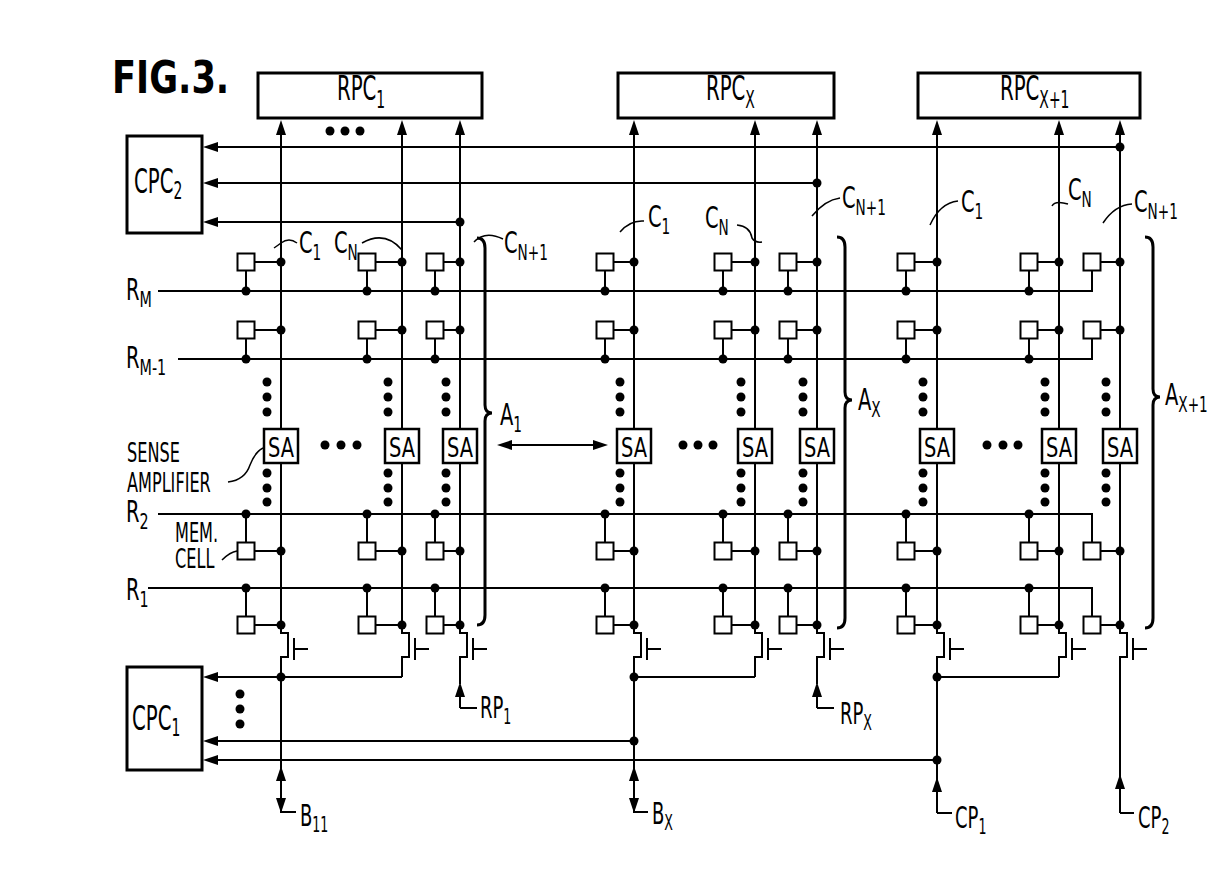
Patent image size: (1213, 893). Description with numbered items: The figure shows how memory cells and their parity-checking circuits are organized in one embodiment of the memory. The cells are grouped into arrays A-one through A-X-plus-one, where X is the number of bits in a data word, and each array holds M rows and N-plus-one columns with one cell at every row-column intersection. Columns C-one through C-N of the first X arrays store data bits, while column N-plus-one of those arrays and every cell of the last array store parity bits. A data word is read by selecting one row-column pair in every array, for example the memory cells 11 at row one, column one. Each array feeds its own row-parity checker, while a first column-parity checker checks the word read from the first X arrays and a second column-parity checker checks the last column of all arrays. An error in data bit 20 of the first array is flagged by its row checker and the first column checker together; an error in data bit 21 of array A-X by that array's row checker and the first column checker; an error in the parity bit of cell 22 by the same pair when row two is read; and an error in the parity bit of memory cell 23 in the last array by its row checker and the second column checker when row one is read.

The memory cells 11 is at (237, 627).
The data bit 20 is at (237, 262).
The data bit 21 is at (713, 332).
The cell 22 is at (786, 560).
The memory cell 23 is at (1093, 635).